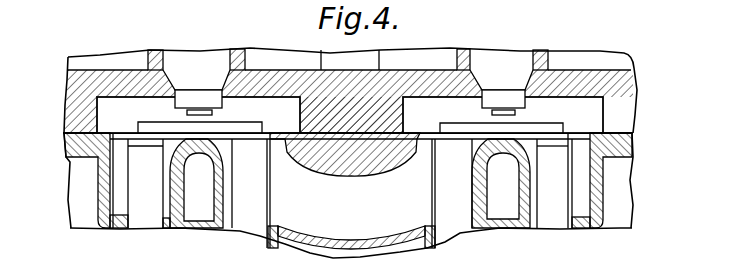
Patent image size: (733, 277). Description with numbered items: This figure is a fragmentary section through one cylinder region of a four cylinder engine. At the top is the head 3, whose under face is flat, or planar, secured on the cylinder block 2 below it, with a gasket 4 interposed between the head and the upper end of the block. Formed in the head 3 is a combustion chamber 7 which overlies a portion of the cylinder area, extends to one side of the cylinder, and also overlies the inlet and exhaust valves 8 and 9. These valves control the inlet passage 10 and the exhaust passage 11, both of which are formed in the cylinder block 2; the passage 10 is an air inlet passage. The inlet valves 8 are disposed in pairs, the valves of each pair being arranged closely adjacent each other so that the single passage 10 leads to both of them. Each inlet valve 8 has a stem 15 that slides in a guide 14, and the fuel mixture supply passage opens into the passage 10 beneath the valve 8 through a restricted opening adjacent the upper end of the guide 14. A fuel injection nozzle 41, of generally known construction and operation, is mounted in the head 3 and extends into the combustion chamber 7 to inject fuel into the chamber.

The cylinder block 2 is at (120, 135).
The head 3 is at (80, 103).
The gasket 4 is at (620, 133).
The combustion chamber 7 is at (578, 115).
The inlet valves 8 is at (278, 139).
The exhaust valves 9 is at (100, 141).
The inlet passage 10 is at (345, 172).
The exhaust passage 11 is at (120, 192).
The guide 14 is at (426, 249).
The stem 15 is at (455, 234).
The fuel injection nozzle 41 is at (501, 60).